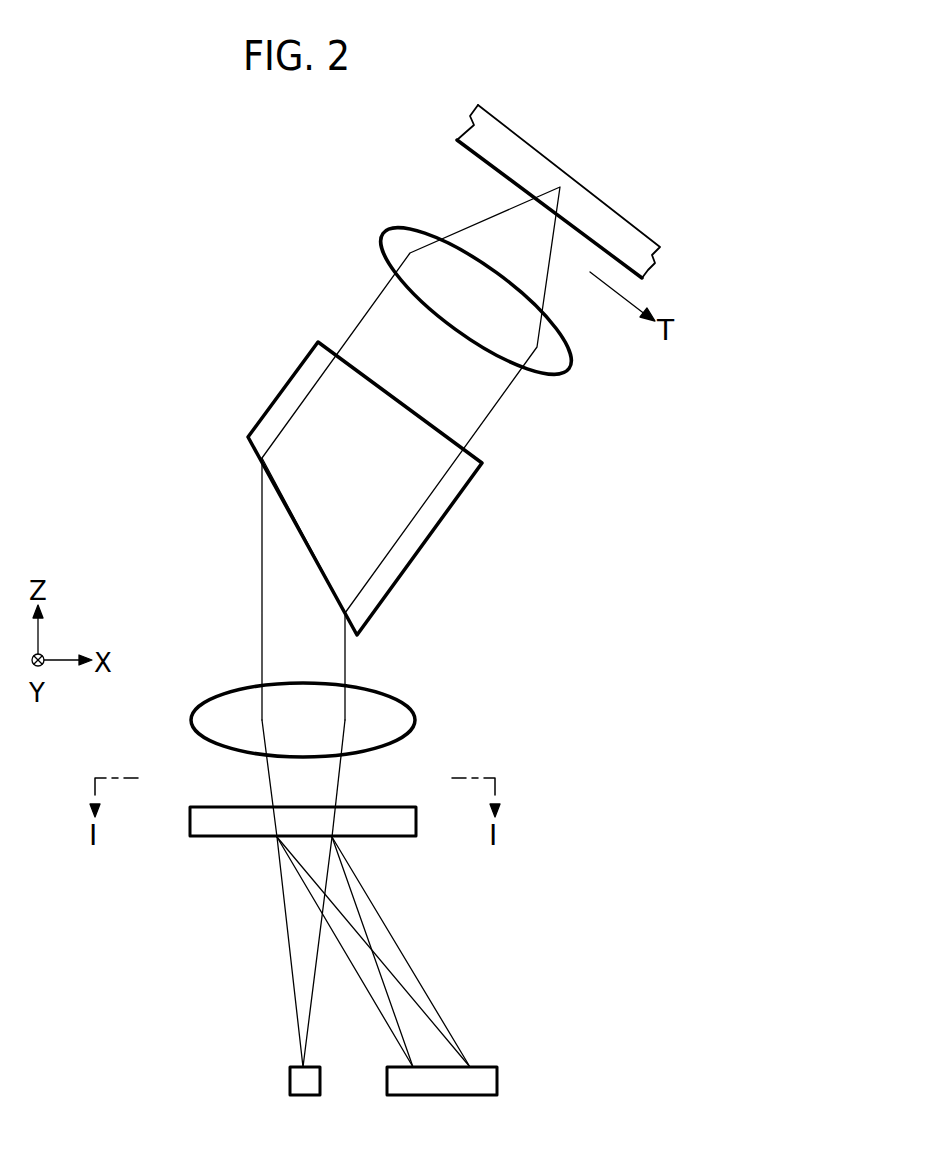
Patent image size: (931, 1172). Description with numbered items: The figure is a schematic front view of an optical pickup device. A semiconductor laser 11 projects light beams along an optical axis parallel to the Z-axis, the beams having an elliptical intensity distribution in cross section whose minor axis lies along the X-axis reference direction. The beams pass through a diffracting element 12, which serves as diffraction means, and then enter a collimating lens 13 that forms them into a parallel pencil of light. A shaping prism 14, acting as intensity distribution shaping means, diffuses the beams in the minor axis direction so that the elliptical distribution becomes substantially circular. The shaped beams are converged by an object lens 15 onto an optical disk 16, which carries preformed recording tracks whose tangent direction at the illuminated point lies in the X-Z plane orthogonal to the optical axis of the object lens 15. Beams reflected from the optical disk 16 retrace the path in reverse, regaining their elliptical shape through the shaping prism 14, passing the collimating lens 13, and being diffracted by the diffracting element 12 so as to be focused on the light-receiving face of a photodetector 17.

The semiconductor laser 11 is at (290, 1080).
The diffracting element 12 is at (190, 823).
The collimating lens 13 is at (192, 716).
The shaping prism 14 is at (266, 408).
The object lens 15 is at (403, 227).
The optical disk 16 is at (477, 162).
The photodetector 17 is at (487, 1067).